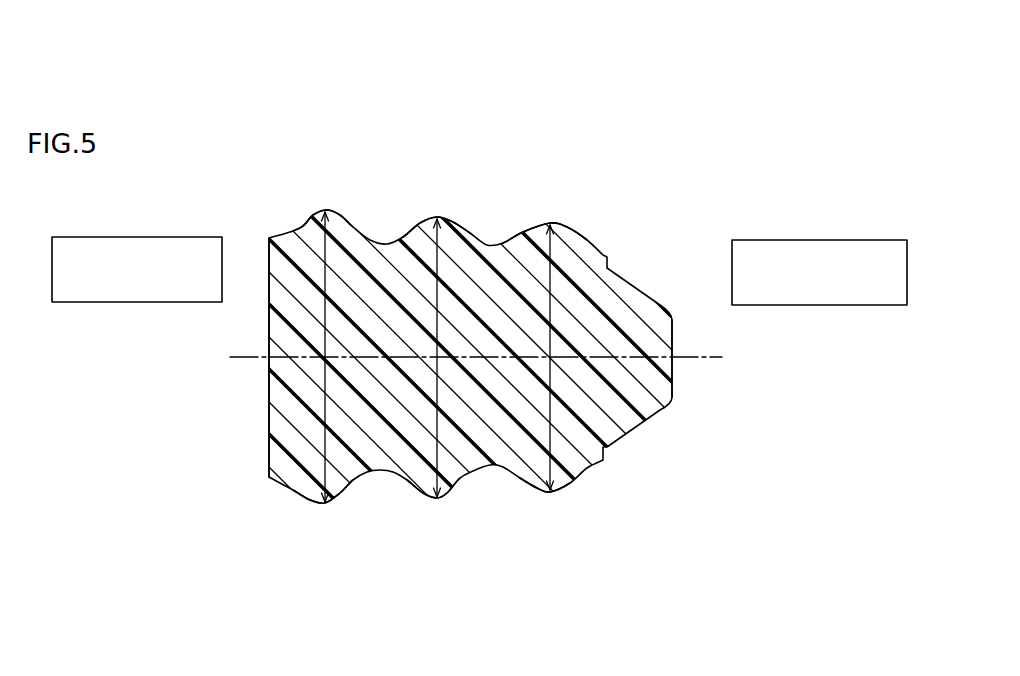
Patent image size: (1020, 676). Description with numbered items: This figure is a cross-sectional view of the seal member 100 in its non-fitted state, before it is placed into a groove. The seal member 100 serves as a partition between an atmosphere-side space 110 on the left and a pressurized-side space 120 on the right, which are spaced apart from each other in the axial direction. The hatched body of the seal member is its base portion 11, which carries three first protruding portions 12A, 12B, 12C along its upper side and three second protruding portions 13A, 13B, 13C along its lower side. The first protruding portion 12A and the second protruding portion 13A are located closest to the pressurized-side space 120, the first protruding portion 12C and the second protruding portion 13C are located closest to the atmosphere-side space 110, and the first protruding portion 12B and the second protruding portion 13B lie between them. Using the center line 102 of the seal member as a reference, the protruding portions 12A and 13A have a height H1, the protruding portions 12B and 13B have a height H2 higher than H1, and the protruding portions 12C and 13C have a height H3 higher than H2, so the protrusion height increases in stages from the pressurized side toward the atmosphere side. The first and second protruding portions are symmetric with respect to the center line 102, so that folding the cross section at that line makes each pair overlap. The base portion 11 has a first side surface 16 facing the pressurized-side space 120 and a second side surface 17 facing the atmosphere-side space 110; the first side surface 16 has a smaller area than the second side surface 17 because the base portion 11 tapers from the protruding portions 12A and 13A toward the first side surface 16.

The seal member 100 is at (510, 350).
The base portion 11 is at (503, 392).
The first protruding portion 12A is at (541, 222).
The first protruding portion 12B is at (428, 214).
The first protruding portion 12C is at (316, 206).
The second protruding portion 13A is at (541, 486).
The second protruding portion 13B is at (428, 497).
The second protruding portion 13C is at (315, 496).
The first side surface 16 is at (674, 338).
The second side surface 17 is at (268, 352).
The center line 102 is at (706, 359).
The atmosphere-side space 110 is at (78, 236).
The pressurized-side space 120 is at (878, 239).
The height H1 is at (552, 282).
The height H2 is at (440, 282).
The height H3 is at (328, 282).